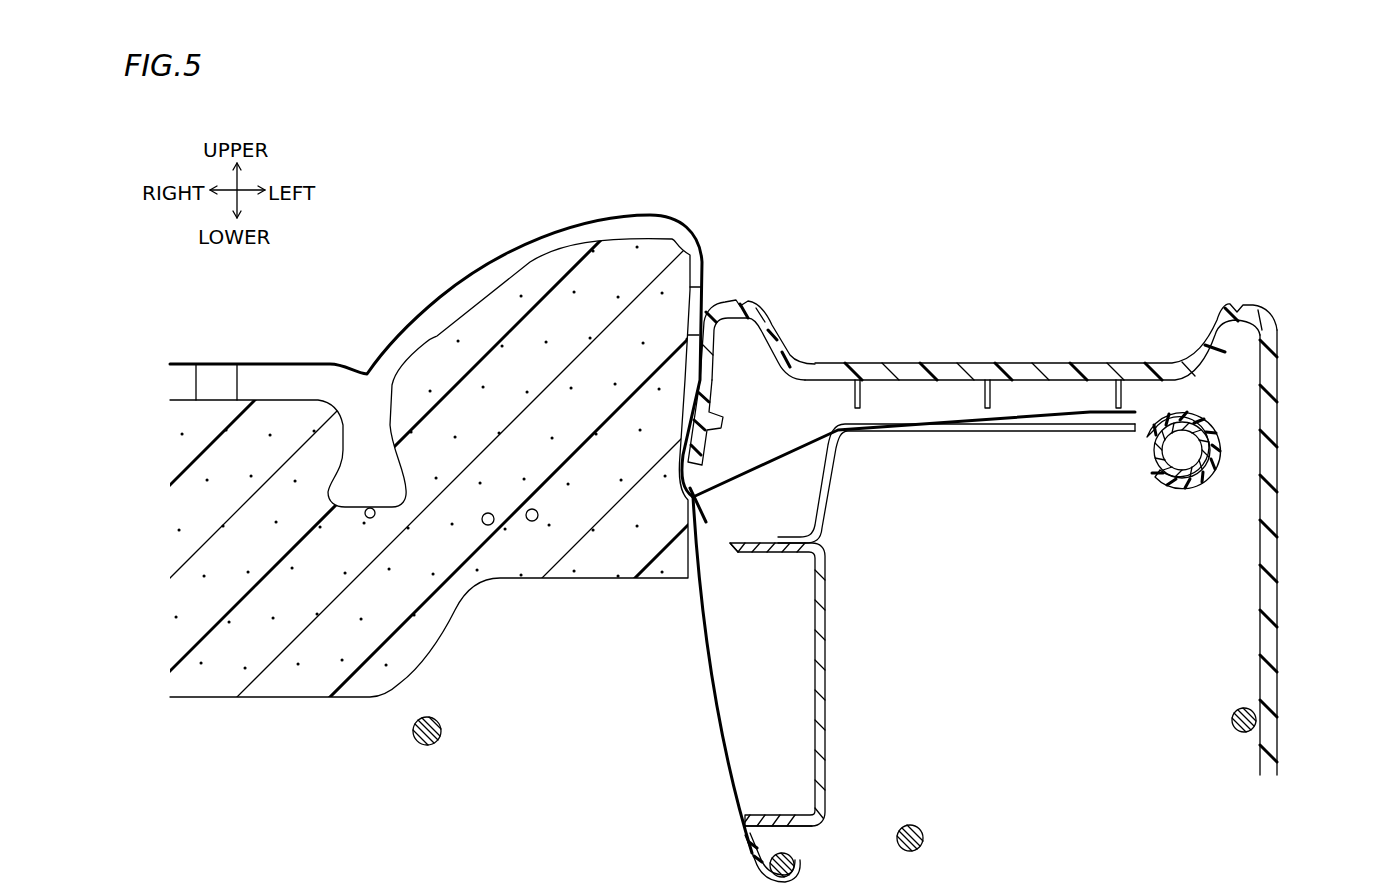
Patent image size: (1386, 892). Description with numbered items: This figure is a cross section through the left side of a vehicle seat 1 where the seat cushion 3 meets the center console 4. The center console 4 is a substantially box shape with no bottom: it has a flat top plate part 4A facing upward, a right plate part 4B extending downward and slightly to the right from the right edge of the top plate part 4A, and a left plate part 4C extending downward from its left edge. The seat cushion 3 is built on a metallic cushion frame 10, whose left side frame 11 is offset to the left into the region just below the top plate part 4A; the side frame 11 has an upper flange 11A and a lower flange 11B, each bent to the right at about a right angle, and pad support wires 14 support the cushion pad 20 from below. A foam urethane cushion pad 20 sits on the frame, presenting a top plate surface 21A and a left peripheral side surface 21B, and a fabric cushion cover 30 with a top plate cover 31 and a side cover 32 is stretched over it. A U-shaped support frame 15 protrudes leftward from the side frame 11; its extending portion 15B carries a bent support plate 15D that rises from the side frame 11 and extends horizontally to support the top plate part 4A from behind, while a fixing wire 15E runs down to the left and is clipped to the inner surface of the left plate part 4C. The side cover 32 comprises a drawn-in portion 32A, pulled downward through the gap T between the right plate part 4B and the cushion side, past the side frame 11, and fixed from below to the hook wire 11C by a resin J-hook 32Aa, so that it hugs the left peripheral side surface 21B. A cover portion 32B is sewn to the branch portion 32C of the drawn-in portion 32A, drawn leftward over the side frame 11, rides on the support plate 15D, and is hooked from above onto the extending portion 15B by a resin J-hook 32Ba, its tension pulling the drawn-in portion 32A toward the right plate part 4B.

The vehicle seat 1 is at (982, 201).
The seat cushion 3 is at (609, 205).
The center console 4 is at (1255, 297).
The top plate part 4A is at (1015, 368).
The right plate part 4B is at (713, 350).
The left plate part 4C is at (1272, 360).
The gap T is at (700, 388).
The cushion frame 10 is at (808, 717).
The side frame 11 is at (821, 641).
The upper flange 11A is at (774, 552).
The lower flange 11B is at (776, 814).
The hook wire 11C is at (757, 862).
The pad support wire 14 is at (433, 746).
The support frame 15 is at (1017, 587).
The extending portion 15B is at (1179, 490).
The support plate 15D is at (987, 432).
The fixing wire 15E is at (1235, 730).
The cushion pad 20 is at (282, 402).
The top plate surface 21A is at (237, 398).
The left peripheral side surface 21B is at (704, 289).
The cushion cover 30 is at (334, 360).
The top plate cover 31 is at (196, 398).
The side cover 32 is at (964, 603).
The drawn-in portion 32A is at (710, 637).
The J-hook 32Aa is at (795, 862).
The cover portion 32B is at (912, 420).
The J-hook 32Ba is at (1215, 430).
The branch portion 32C is at (703, 498).